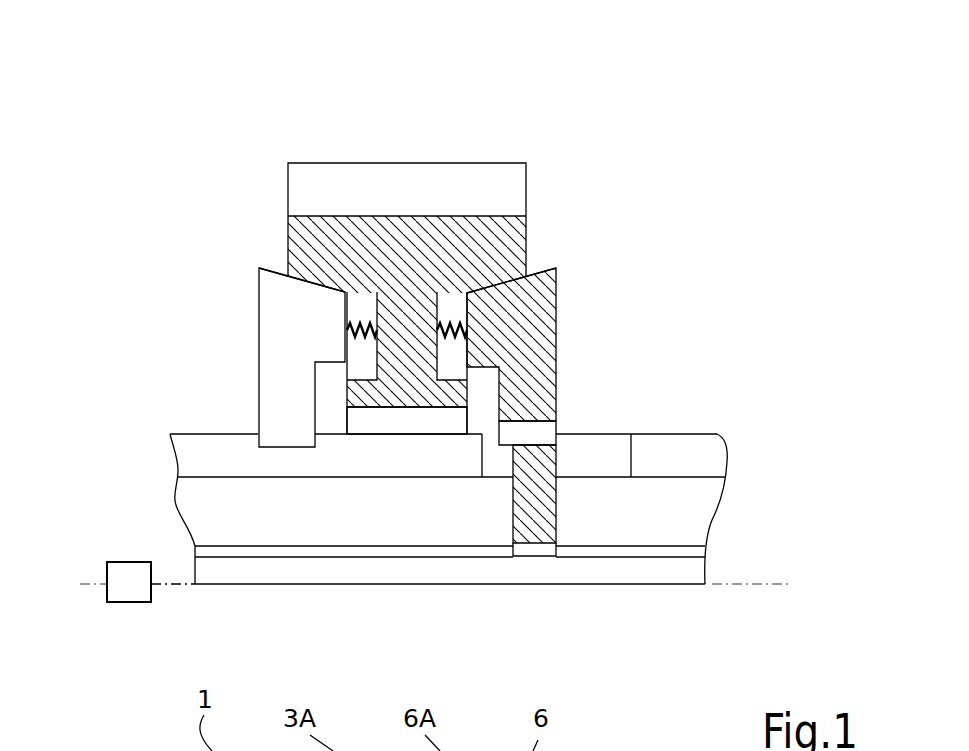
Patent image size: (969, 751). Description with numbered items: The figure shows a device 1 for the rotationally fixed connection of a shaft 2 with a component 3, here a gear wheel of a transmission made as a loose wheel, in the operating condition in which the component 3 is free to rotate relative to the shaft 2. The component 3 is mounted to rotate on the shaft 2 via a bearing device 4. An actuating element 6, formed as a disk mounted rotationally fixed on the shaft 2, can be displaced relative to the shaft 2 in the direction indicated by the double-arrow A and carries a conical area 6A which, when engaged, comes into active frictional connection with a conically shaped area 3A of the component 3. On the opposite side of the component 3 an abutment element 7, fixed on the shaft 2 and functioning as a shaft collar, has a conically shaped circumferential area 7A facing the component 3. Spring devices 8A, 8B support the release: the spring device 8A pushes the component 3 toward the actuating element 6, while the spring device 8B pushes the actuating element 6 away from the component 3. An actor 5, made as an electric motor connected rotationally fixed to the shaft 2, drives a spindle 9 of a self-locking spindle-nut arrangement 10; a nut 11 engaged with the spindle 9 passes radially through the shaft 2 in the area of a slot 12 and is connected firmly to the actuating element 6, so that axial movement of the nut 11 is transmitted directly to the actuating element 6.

The device 1 is at (228, 124).
The shaft 2 is at (220, 448).
The component 3 is at (300, 185).
The conically shaped area 3A is at (470, 292).
The bearing device 4 is at (360, 423).
The actor 5 is at (138, 572).
The actuating element 6 is at (543, 312).
The conical area of the actuating element 6A is at (545, 265).
The abutment element 7 is at (278, 305).
The circumferential area 7A is at (275, 268).
The spring device 8A is at (362, 335).
The spring device 8B is at (443, 338).
The spindle 9 is at (266, 598).
The spindle-nut arrangement 10 is at (538, 580).
The nut 11 is at (540, 525).
The slot 12 is at (587, 460).
The double-arrow A is at (578, 352).